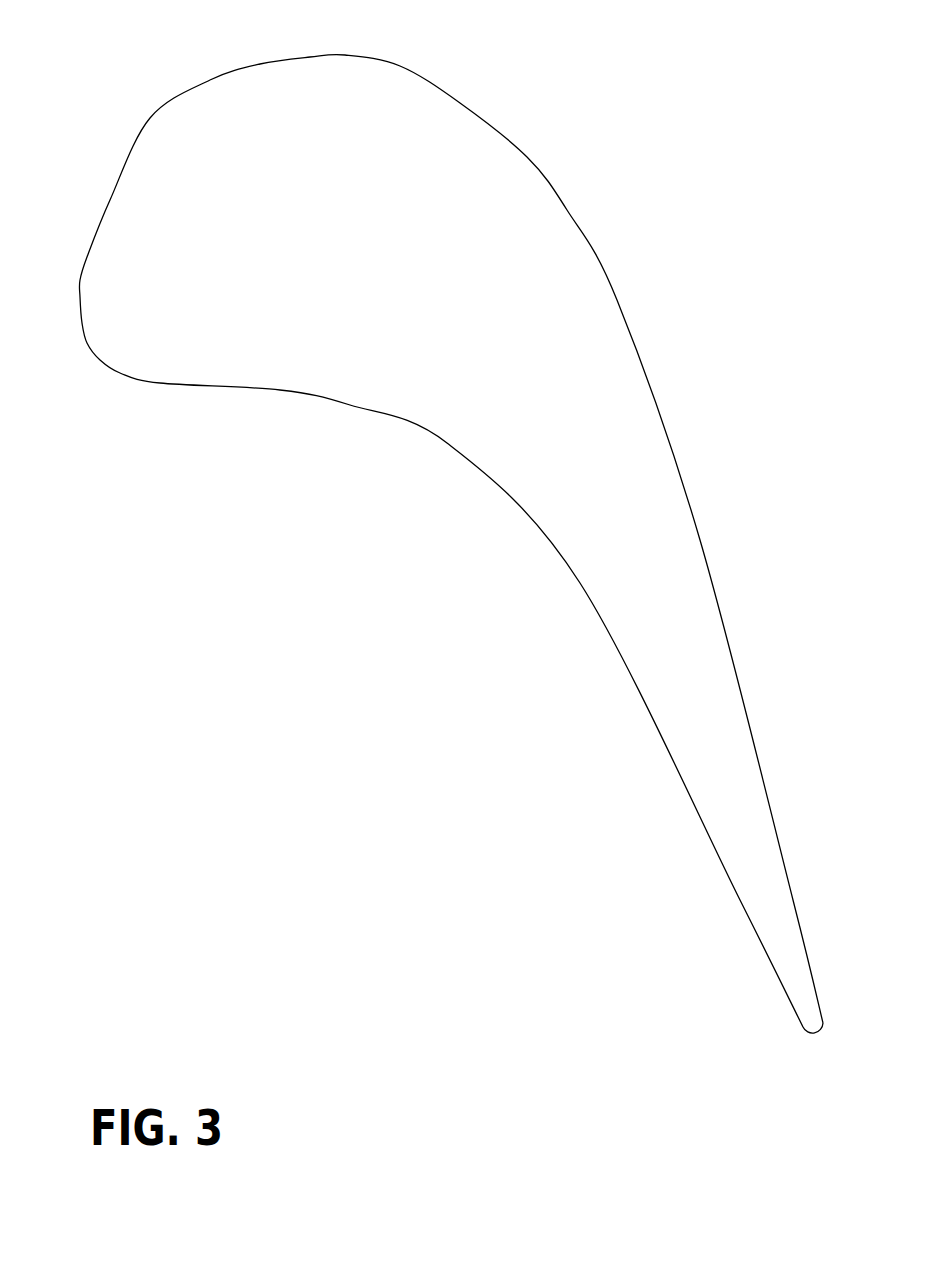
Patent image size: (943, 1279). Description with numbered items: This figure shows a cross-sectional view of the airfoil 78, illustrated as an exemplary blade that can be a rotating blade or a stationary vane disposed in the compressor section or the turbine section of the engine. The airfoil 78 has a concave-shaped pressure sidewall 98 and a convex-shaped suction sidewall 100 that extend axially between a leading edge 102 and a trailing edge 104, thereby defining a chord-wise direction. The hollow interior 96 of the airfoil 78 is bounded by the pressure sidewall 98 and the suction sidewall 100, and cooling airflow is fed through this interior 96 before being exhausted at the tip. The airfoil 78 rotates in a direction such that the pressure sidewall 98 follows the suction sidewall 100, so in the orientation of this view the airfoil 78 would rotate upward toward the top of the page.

The airfoil 78 is at (141, 112).
The interior 96 is at (364, 243).
The pressure sidewall 98 is at (447, 443).
The suction sidewall 100 is at (567, 210).
The leading edge 102 is at (87, 343).
The trailing edge 104 is at (815, 1040).